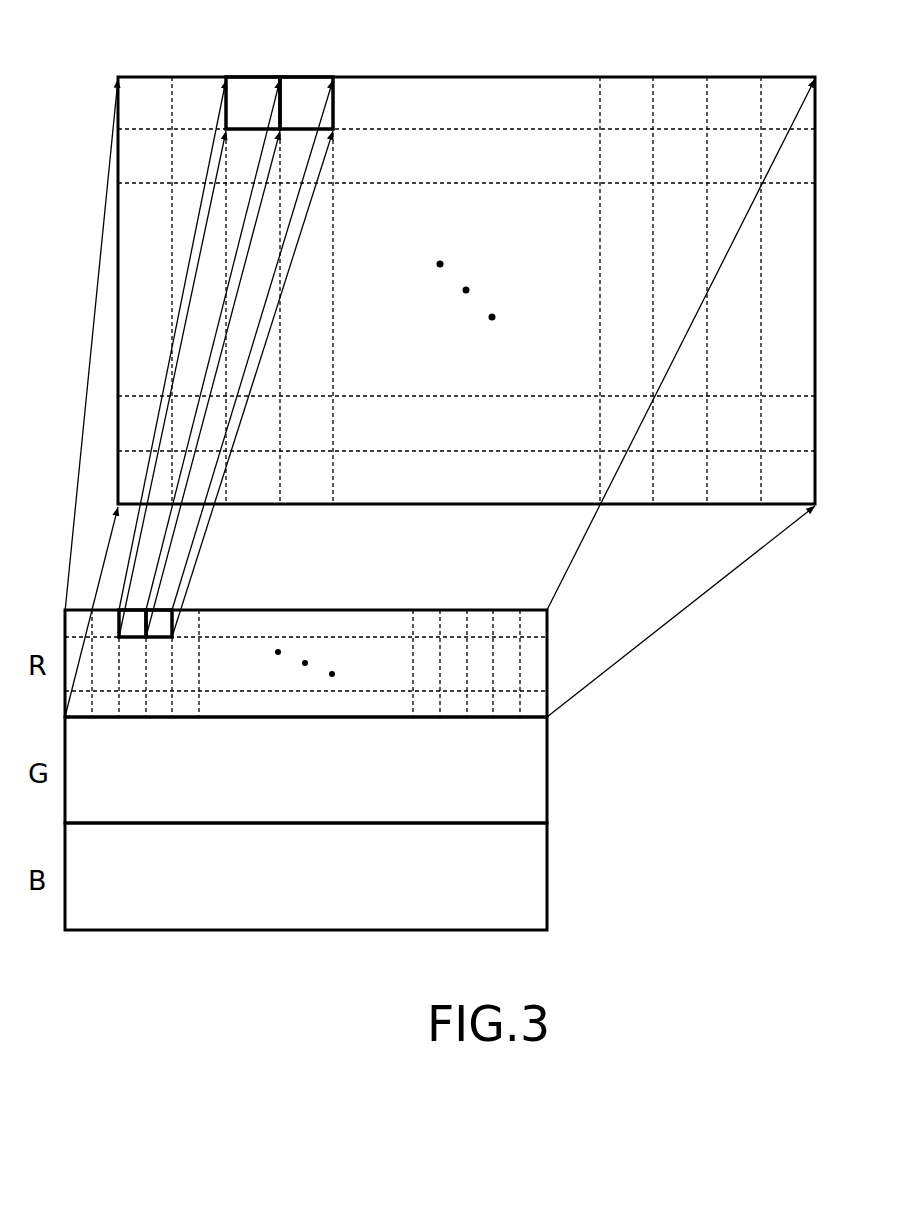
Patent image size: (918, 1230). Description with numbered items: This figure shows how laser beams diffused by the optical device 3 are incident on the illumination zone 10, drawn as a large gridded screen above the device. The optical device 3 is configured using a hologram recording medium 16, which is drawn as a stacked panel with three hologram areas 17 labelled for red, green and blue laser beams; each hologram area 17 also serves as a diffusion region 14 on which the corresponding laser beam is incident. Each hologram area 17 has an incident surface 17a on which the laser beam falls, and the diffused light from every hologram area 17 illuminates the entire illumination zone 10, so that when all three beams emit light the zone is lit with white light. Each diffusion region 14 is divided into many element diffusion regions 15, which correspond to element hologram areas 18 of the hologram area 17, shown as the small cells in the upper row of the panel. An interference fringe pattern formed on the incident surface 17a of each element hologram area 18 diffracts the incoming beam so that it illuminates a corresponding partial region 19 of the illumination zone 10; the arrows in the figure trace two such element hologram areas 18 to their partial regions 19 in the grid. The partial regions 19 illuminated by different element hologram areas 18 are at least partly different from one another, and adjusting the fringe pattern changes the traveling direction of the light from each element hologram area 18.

The illumination zone 10 is at (466, 294).
The partial region 19 is at (300, 92).
The optical device 3 is at (364, 769).
The hologram recording medium 16 is at (364, 769).
The diffusion region 14 is at (364, 744).
The hologram area 17 is at (364, 744).
The incident surface 17a is at (355, 626).
The element diffusion region 15 is at (227, 598).
The element hologram area 18 is at (190, 632).